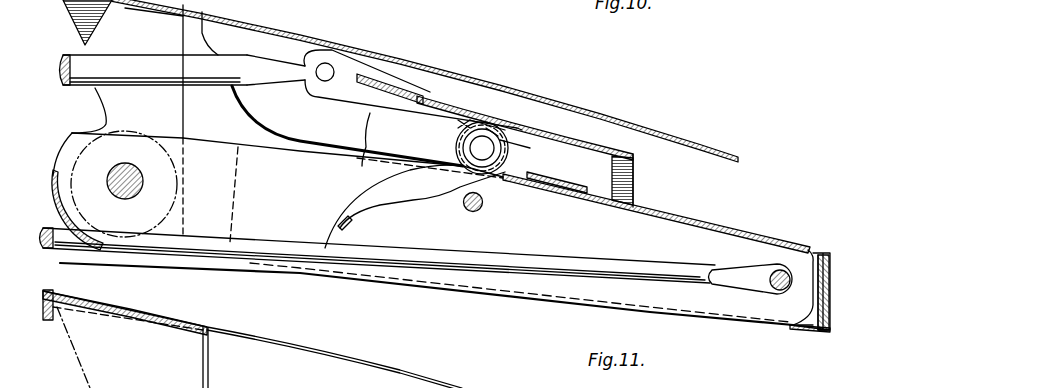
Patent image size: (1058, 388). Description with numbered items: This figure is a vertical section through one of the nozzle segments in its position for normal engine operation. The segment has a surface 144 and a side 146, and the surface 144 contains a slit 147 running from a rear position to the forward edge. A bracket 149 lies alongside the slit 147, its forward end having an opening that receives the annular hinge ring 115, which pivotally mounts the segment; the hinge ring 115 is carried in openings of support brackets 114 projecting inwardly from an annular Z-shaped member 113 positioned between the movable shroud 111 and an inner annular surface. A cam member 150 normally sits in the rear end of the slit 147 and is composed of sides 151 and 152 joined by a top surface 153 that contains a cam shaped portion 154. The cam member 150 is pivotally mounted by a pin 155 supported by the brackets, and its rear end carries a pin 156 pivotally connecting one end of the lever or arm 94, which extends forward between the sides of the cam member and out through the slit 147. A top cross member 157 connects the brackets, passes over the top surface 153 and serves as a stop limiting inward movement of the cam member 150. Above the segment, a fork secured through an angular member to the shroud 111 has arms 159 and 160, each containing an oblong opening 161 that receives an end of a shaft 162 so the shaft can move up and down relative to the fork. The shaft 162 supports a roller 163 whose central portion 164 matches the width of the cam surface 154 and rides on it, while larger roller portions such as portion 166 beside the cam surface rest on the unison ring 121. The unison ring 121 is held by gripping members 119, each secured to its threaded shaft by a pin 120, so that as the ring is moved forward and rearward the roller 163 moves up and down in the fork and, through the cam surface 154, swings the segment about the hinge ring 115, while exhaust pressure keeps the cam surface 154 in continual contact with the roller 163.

The lever 94 is at (586, 254).
The movable shroud 111 is at (618, 119).
The annular Z-shaped member 113 is at (58, 325).
The support bracket 114 is at (80, 33).
The annular hinge ring 115 is at (140, 182).
The gripping member 119 is at (373, 78).
The pin 120 is at (328, 62).
The unison ring 121 is at (518, 127).
The surface 144 is at (822, 334).
The side 146 is at (232, 216).
The slit 147 is at (800, 327).
The bracket 149 is at (204, 152).
The cam member 150 is at (732, 222).
The side 151 is at (416, 196).
The side 152 is at (557, 292).
The top surface 153 is at (690, 215).
The cam shaped portion 154 is at (358, 188).
The pin 155 is at (485, 204).
The pin 156 is at (780, 268).
The top cross member 157 is at (560, 184).
The arm 159 is at (394, 139).
The arm 160 is at (347, 126).
The oblong opening 161 is at (492, 124).
The shaft 162 is at (490, 150).
The roller 163 is at (512, 142).
The central portion 164 is at (461, 117).
The roller portion 166 is at (490, 128).